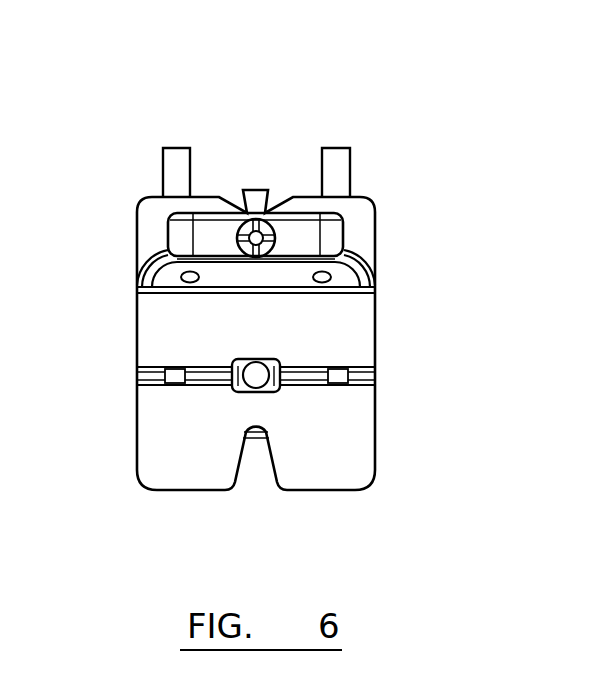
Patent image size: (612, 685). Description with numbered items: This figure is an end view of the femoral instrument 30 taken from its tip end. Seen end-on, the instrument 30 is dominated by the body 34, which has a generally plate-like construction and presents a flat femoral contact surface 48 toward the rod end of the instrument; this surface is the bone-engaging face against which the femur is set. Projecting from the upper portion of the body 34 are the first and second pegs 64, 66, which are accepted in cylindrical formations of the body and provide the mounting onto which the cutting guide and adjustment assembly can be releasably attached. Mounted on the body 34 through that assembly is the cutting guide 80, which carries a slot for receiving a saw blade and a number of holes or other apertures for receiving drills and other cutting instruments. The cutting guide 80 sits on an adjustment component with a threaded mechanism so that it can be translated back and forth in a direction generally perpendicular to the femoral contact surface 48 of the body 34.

The instrument 30 is at (250, 152).
The body 34 is at (377, 330).
The femoral contact surface 48 is at (333, 445).
The first peg 64 is at (337, 173).
The second peg 66 is at (180, 177).
The cutting guide 80 is at (168, 238).